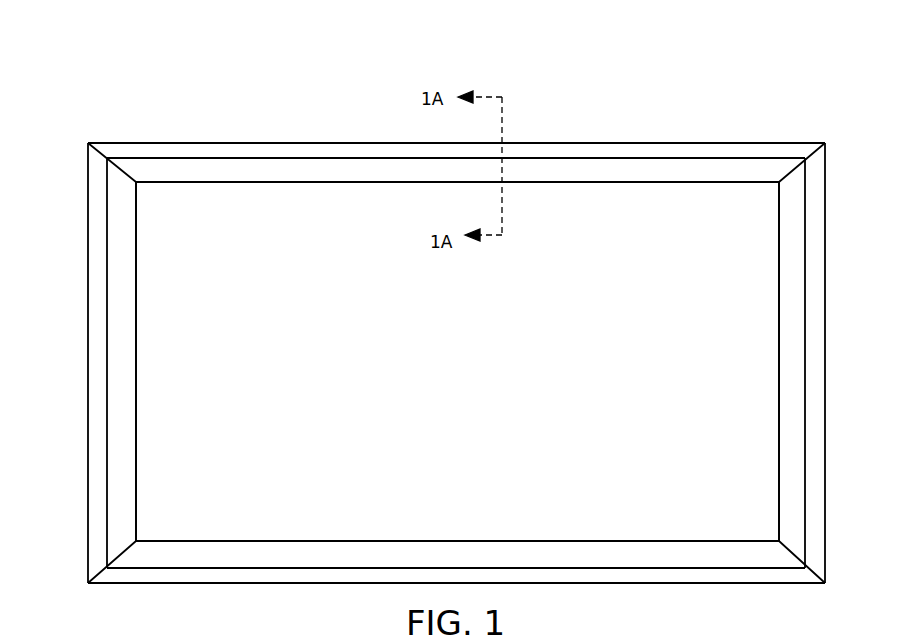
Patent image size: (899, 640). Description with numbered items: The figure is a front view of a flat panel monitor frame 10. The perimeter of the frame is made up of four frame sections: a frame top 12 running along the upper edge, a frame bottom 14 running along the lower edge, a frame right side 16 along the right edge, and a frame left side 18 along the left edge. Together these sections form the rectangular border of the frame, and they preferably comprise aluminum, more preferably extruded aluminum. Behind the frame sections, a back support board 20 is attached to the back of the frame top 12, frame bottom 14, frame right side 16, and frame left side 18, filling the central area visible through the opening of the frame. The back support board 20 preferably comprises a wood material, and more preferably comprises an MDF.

The flat panel monitor frame 10 is at (455, 326).
The frame top 12 is at (230, 162).
The frame bottom 14 is at (697, 558).
The frame right side 16 is at (795, 282).
The frame left side 18 is at (122, 297).
The back support board 20 is at (247, 344).